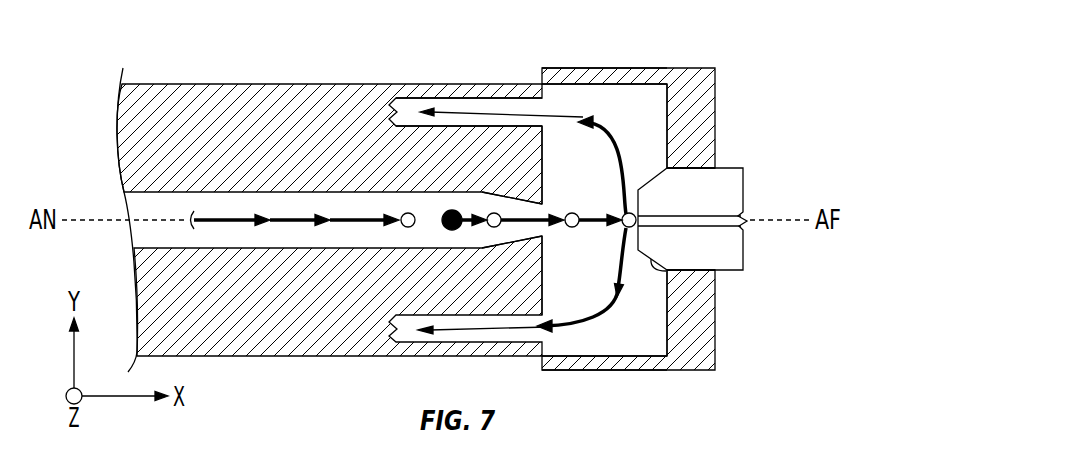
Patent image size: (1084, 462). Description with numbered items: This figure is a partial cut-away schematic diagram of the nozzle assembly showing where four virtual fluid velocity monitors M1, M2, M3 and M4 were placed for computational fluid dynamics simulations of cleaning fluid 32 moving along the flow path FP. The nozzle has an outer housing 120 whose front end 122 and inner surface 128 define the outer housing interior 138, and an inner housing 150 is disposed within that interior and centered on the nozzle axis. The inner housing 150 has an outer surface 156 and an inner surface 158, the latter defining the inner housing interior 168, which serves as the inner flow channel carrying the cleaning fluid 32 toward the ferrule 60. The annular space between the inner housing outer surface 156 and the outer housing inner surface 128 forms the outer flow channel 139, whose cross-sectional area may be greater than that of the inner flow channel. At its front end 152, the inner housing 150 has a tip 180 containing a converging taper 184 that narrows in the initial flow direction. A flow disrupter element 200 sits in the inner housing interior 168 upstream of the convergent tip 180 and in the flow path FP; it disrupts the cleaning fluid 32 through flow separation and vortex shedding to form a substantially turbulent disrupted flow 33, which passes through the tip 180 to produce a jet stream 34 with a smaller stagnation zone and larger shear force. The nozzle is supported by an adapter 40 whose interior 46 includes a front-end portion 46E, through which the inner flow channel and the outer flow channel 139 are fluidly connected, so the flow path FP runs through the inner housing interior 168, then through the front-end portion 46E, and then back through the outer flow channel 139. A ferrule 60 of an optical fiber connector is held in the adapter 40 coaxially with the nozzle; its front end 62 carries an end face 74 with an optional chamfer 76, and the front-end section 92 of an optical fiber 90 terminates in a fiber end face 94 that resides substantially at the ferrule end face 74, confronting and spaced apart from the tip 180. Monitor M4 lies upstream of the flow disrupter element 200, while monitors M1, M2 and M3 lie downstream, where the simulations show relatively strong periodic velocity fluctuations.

The outer housing 120 is at (318, 78).
The inner housing 150 is at (232, 258).
The outer flow channel 139 is at (402, 106).
The inner surface 128 is at (447, 95).
The outer surface 156 is at (425, 124).
The tip 180 is at (524, 190).
The converging taper 184 is at (524, 234).
The front end 152 is at (546, 203).
The adapter 40 is at (711, 67).
The front end 122 is at (591, 82).
The outer housing interior 138 is at (653, 112).
The jet stream 34 is at (568, 240).
The end face 74 is at (634, 243).
The interior 46 is at (620, 120).
The front-end portion 46E is at (559, 303).
The ferrule 60 is at (730, 152).
The front end 62 is at (636, 178).
The fiber end face 94 is at (635, 215).
The front-end section 92 is at (712, 217).
The optical fiber 90 is at (712, 235).
The chamfer 76 is at (658, 272).
The inner housing interior 168 is at (158, 207).
The cleaning fluid 32 is at (281, 217).
The inner surface 158 is at (262, 244).
The flow disrupter element 200 is at (449, 231).
The fluid velocity monitor M4 is at (404, 213).
The fluid velocity monitor M1 is at (494, 229).
The fluid velocity monitor M2 is at (573, 212).
The fluid velocity monitor M3 is at (623, 226).
The disrupted flow 33 is at (478, 200).
The flow path FP is at (608, 138).